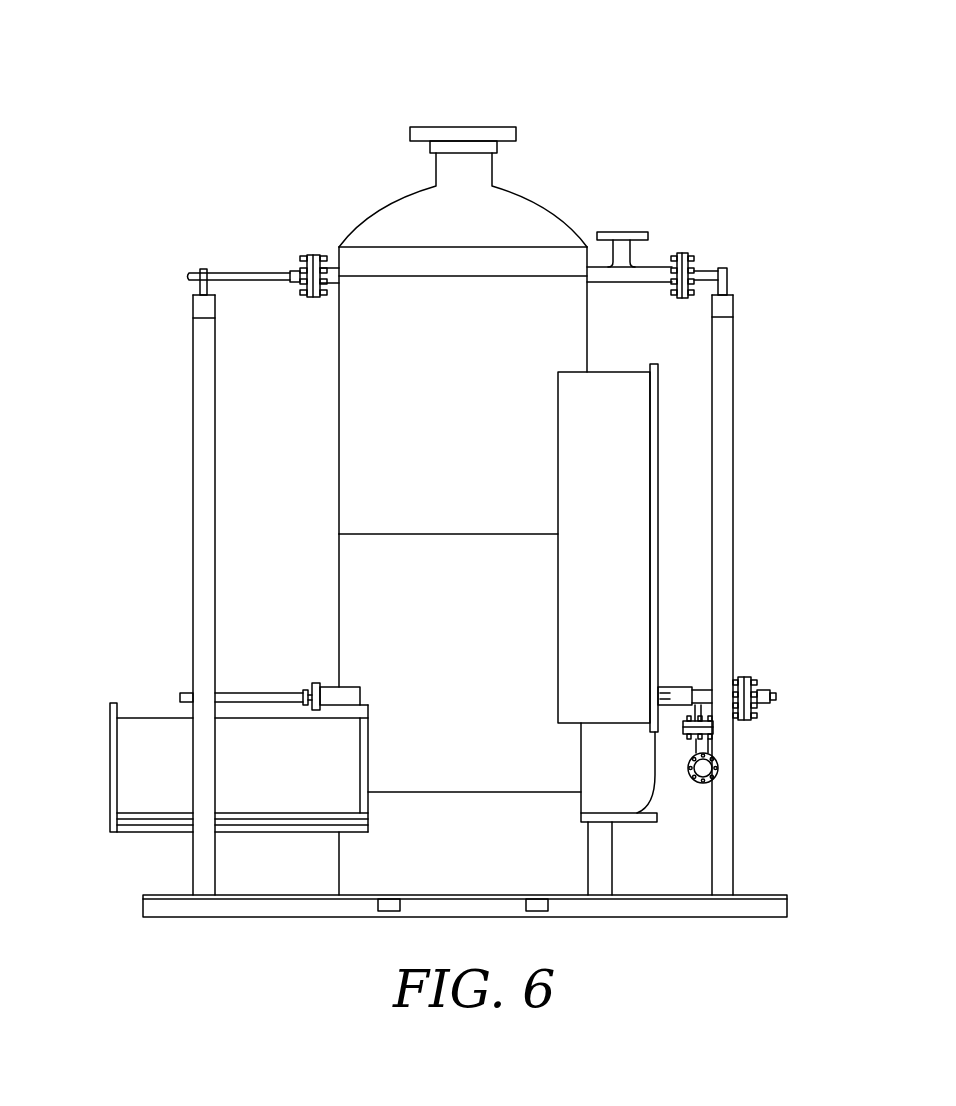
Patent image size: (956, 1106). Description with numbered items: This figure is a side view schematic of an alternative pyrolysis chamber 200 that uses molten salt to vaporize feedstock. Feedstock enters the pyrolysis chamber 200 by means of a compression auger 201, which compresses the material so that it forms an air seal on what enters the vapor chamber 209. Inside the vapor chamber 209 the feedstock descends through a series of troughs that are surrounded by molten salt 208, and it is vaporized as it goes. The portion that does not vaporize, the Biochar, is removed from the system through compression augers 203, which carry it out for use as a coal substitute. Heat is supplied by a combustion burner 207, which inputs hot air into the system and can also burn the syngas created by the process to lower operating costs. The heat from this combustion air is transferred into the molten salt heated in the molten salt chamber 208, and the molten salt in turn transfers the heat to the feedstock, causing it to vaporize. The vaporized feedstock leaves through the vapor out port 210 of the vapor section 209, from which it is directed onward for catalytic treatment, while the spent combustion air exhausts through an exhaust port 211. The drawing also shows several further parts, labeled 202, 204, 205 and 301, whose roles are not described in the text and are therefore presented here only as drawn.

The pyrolysis chamber 200 is at (585, 98).
The compression auger 201 is at (650, 275).
The heat exchanger 202 is at (635, 496).
The compression augers 203 is at (777, 702).
The valve 204 is at (703, 768).
The drain pipe 205 is at (620, 795).
The combustion burner 207 is at (110, 763).
The molten salt chamber 208 is at (362, 583).
The vapor chamber 209 is at (357, 360).
The vapor out port 210 is at (470, 127).
The exhaust port 211 is at (612, 372).
The actuator 301 is at (158, 728).